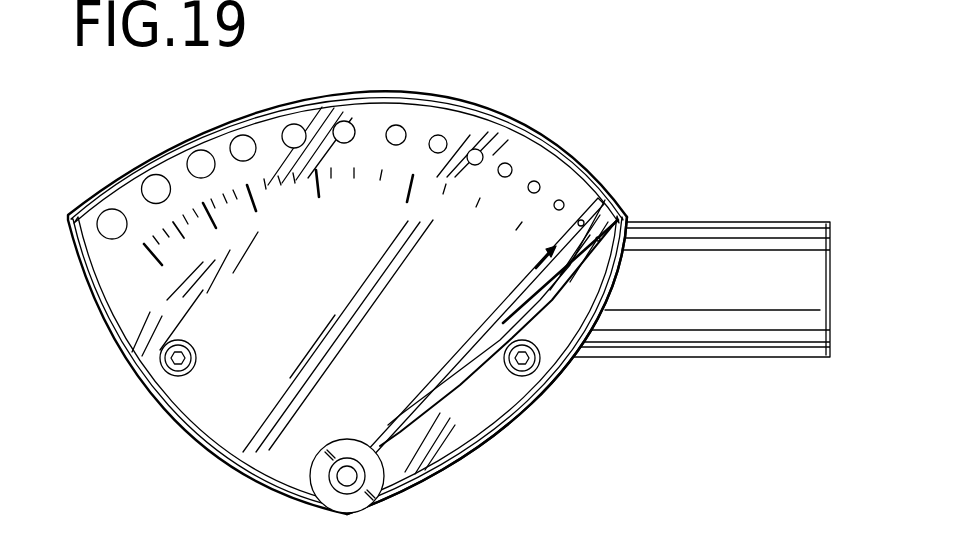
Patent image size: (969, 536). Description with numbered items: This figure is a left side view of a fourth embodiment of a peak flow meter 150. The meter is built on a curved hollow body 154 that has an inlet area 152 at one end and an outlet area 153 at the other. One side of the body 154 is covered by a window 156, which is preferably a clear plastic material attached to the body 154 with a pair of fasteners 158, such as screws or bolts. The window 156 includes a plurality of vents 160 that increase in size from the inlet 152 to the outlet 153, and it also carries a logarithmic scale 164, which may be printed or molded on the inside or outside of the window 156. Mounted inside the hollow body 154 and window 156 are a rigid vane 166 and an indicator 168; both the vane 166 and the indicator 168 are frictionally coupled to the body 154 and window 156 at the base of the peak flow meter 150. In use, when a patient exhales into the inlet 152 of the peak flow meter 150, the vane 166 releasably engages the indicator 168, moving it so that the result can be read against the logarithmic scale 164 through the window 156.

The peak flow meter 150 is at (622, 138).
The inlet area 152 is at (832, 242).
The outlet area 153 is at (97, 317).
The curved hollow body 154 is at (577, 355).
The window 156 is at (252, 393).
The fasteners 158 is at (165, 370).
The vents 160 is at (392, 126).
The logarithmic scale 164 is at (434, 232).
The rigid vane 166 is at (458, 385).
The indicator 168 is at (390, 424).